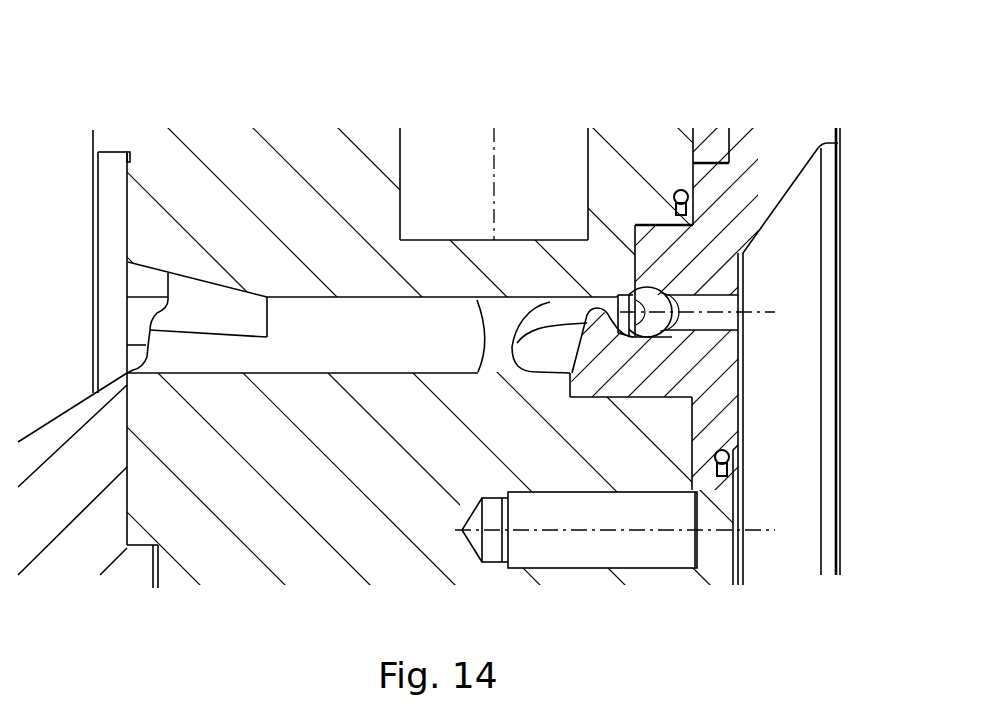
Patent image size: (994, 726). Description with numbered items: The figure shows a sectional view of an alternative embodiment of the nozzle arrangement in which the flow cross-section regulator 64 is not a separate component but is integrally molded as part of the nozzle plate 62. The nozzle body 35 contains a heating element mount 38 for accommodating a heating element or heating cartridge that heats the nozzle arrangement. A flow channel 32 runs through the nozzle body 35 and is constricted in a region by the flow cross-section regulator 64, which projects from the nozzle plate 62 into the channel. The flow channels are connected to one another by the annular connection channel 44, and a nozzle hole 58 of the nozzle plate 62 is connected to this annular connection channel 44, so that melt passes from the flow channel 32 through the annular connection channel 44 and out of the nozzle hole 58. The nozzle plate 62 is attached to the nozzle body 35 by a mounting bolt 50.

The flow channel 32 is at (305, 335).
The nozzle body 35 is at (615, 185).
The heating element mount 38 is at (438, 167).
The annular connection channel 44 is at (668, 293).
The mounting bolt 50 is at (713, 507).
The nozzle hole 58 is at (755, 323).
The nozzle plate 62 is at (752, 162).
The flow cross-section regulator 64 is at (600, 345).